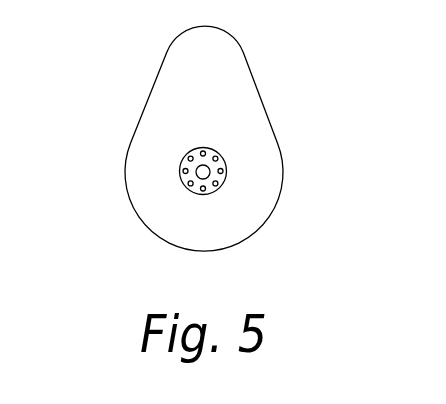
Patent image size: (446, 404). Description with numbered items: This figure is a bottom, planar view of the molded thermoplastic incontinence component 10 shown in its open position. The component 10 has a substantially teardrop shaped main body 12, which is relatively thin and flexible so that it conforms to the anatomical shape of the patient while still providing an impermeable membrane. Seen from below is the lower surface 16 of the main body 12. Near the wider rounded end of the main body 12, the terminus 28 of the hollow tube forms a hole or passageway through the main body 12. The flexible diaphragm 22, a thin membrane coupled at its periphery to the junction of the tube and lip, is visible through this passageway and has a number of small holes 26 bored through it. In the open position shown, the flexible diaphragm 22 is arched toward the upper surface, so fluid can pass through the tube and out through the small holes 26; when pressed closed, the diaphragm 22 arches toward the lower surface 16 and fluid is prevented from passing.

The molded incontinence component 10 is at (145, 73).
The main body 12 is at (213, 111).
The lower surface 16 is at (153, 127).
The flexible diaphragm 22 is at (223, 178).
The small holes 26 is at (185, 190).
The terminus 28 is at (220, 173).